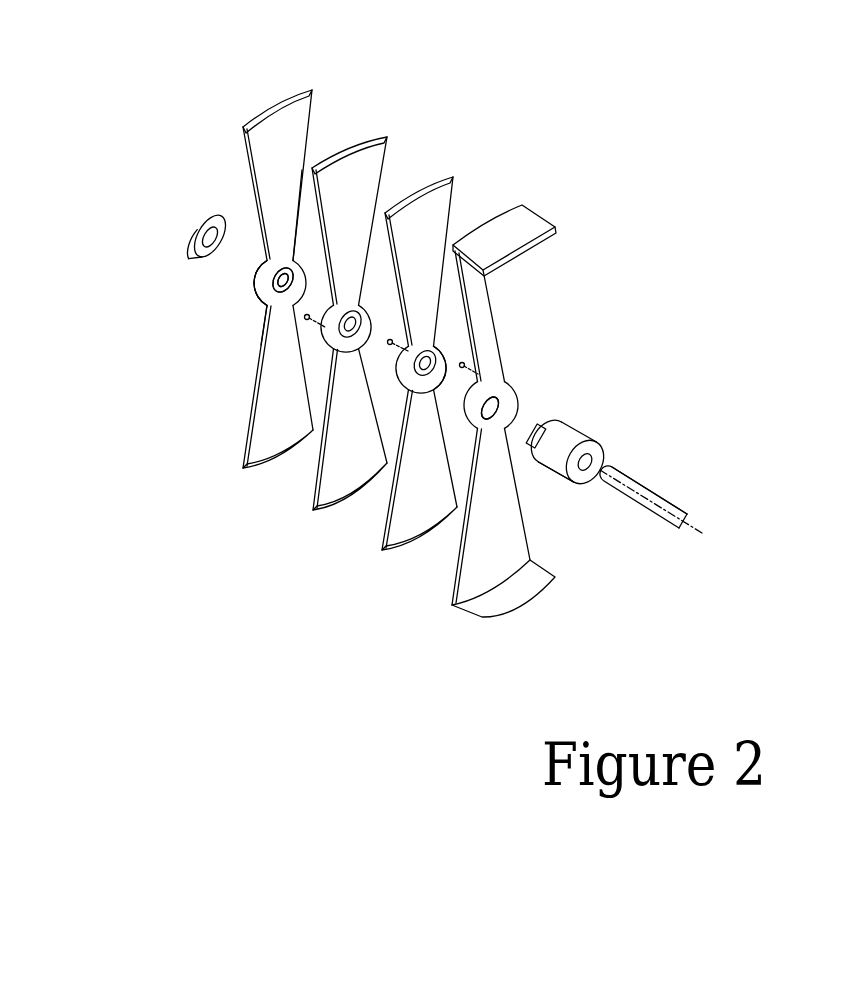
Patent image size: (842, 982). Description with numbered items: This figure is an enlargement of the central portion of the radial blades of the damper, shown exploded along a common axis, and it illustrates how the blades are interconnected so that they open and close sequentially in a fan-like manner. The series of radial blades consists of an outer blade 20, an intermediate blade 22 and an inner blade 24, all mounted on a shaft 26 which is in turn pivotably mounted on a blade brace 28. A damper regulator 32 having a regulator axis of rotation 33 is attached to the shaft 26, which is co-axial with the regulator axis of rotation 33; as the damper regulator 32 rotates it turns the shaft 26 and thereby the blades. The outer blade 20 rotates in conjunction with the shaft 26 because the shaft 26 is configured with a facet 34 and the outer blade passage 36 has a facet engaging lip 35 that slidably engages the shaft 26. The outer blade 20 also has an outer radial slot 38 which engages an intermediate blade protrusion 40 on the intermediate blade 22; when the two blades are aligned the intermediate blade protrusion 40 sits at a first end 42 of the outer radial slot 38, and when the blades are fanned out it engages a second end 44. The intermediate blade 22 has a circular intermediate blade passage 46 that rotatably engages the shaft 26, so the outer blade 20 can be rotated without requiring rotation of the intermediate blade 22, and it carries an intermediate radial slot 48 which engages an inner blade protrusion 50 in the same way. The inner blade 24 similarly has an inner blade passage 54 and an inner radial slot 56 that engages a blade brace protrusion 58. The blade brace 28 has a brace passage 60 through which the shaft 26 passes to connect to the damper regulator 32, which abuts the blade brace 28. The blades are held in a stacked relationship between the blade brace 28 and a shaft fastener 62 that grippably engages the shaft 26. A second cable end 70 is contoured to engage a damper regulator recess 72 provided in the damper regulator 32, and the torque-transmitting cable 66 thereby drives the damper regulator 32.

The outer blade 20 is at (300, 112).
The intermediate blade 22 is at (373, 150).
The inner blade 24 is at (443, 203).
The shaft 26 is at (539, 422).
The blade brace 28 is at (498, 308).
The damper regulator 32 is at (560, 440).
The regulator axis of rotation 33 is at (687, 523).
The facet 34 is at (537, 467).
The facet engaging lip 35 is at (299, 243).
The outer blade passage 36 is at (287, 272).
The outer radial slot 38 is at (254, 302).
The intermediate blade protrusion 40 is at (308, 320).
The first end 42 is at (257, 303).
The second end 44 is at (255, 283).
The intermediate blade passage 46 is at (345, 346).
The intermediate radial slot 48 is at (257, 305).
The inner blade protrusion 50 is at (390, 345).
The inner blade passage 54 is at (417, 384).
The inner radial slot 56 is at (451, 350).
The blade brace protrusion 58 is at (462, 368).
The brace passage 60 is at (500, 420).
The shaft fastener 62 is at (199, 224).
The shaft 66 is at (665, 505).
The second cable end 70 is at (620, 473).
The damper regulator recess 72 is at (588, 463).